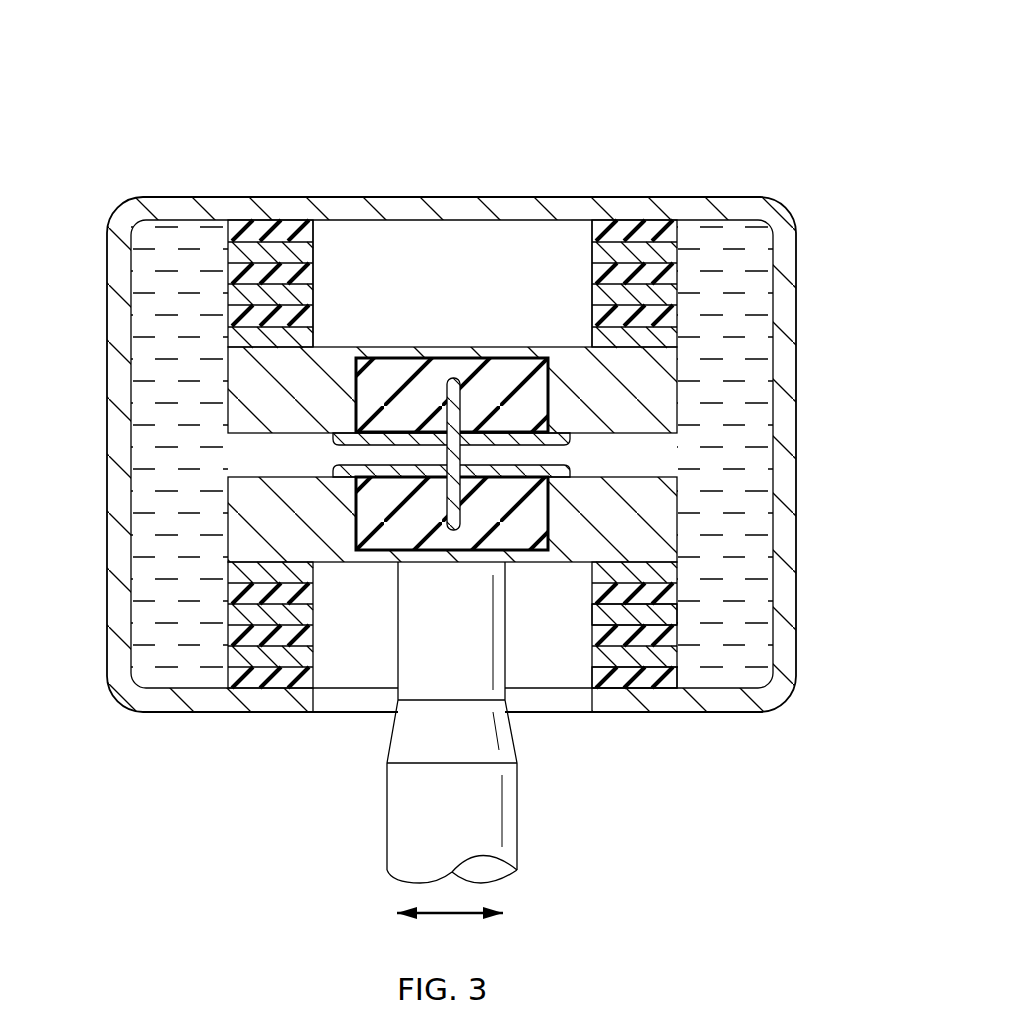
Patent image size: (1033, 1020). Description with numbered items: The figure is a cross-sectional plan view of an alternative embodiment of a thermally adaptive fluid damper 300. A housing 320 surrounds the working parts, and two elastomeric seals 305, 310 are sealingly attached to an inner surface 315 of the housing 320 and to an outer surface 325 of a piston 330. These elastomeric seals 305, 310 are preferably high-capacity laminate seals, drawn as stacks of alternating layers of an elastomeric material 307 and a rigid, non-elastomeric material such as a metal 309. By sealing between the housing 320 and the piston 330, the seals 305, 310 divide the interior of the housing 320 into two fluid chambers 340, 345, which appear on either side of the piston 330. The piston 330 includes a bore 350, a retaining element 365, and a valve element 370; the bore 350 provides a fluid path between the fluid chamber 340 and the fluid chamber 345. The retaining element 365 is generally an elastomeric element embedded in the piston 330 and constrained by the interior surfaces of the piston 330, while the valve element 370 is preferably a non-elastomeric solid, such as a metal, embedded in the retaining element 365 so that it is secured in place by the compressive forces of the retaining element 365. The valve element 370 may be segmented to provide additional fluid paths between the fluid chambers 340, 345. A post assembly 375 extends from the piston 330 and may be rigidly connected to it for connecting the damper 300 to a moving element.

The thermally adaptive fluid damper 300 is at (241, 60).
The elastomeric seal 305 is at (327, 261).
The elastomeric material 307 is at (592, 676).
The metal 309 is at (592, 617).
The elastomeric seal 310 is at (579, 261).
The inner surface 315 is at (463, 222).
The housing 320 is at (685, 188).
The outer surface 325 is at (340, 563).
The piston 330 is at (361, 316).
The fluid chamber 340 is at (140, 489).
The fluid chamber 345 is at (763, 376).
The bore 350 is at (655, 456).
The retaining element 365 is at (512, 365).
The valve element 370 is at (450, 378).
The post assembly 375 is at (387, 815).